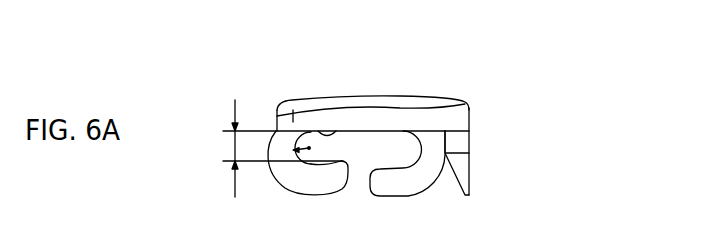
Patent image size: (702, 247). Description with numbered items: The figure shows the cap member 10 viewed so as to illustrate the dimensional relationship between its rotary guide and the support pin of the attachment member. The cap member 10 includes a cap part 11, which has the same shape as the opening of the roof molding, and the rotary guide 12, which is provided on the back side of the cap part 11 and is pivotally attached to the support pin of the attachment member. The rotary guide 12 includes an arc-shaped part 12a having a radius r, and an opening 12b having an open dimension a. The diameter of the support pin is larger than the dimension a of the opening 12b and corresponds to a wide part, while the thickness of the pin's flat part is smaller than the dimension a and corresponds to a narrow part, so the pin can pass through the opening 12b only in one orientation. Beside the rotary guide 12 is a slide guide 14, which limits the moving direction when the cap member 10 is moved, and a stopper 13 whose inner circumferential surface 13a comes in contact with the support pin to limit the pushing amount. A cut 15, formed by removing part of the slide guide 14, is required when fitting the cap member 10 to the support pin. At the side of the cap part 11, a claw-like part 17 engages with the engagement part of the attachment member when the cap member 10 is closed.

The cap member 10 is at (507, 60).
The cap part 11 is at (410, 99).
The rotary guide 12 is at (298, 177).
The arc-shaped part 12a is at (307, 165).
The opening 12b is at (327, 150).
The stopper 13 is at (415, 167).
The inner circumferential surface 13a is at (411, 128).
The slide guide 14 is at (383, 185).
The cut 15 is at (360, 185).
The claw-like part 17 is at (465, 176).
The open dimension a is at (227, 148).
The radius r is at (296, 148).